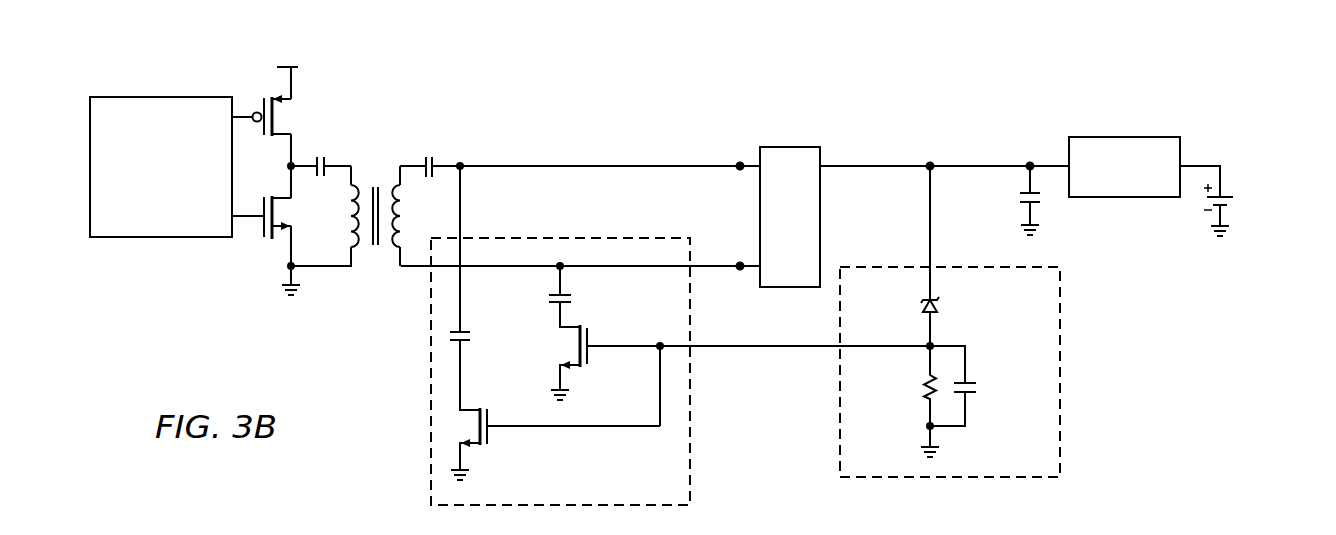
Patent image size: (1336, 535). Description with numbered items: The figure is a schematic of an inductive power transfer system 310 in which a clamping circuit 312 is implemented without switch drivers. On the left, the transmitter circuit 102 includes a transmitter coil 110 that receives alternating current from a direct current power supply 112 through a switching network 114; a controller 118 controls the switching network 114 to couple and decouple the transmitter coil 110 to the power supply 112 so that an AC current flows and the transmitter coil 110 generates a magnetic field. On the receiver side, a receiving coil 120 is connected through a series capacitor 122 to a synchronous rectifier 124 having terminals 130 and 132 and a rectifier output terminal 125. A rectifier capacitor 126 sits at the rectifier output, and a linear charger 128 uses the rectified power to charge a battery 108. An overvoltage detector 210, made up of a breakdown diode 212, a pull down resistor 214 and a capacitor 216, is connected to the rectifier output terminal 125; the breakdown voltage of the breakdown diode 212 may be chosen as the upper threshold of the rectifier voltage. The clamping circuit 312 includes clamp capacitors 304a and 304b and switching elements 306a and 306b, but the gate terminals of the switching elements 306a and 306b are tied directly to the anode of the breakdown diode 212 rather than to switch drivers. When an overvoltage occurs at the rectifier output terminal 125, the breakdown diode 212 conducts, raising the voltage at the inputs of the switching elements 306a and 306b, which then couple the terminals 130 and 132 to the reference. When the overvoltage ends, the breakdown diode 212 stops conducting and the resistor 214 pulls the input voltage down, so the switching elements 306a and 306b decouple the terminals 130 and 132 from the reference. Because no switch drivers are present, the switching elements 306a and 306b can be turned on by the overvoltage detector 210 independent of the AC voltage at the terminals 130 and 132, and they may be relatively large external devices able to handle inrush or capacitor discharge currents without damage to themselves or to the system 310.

The transmitter circuit 102 is at (360, 169).
The battery 108 is at (1233, 200).
The transmitter coil 110 is at (355, 183).
The direct current power supply 112 is at (285, 67).
The switching network 114 is at (330, 127).
The controller 118 is at (160, 95).
The receiving coil 120 is at (390, 248).
The series capacitor 122 is at (430, 155).
The synchronous rectifier 124 is at (792, 145).
The rectifier output terminal 125 is at (900, 163).
The rectifier capacitor 126 is at (1020, 197).
The linear charger 128 is at (1125, 135).
The terminal 130 is at (740, 162).
The terminal 132 is at (740, 270).
The overvoltage detector 210 is at (987, 321).
The breakdown diode 212 is at (923, 305).
The pull down resistor 214 is at (925, 382).
The capacitor 216 is at (977, 387).
The clamp capacitor 304a is at (574, 297).
The clamp capacitor 304b is at (472, 338).
The switching element 306a is at (590, 333).
The switching element 306b is at (490, 440).
The inductive power transfer system 310 is at (981, 64).
The clamping circuit 312 is at (643, 335).